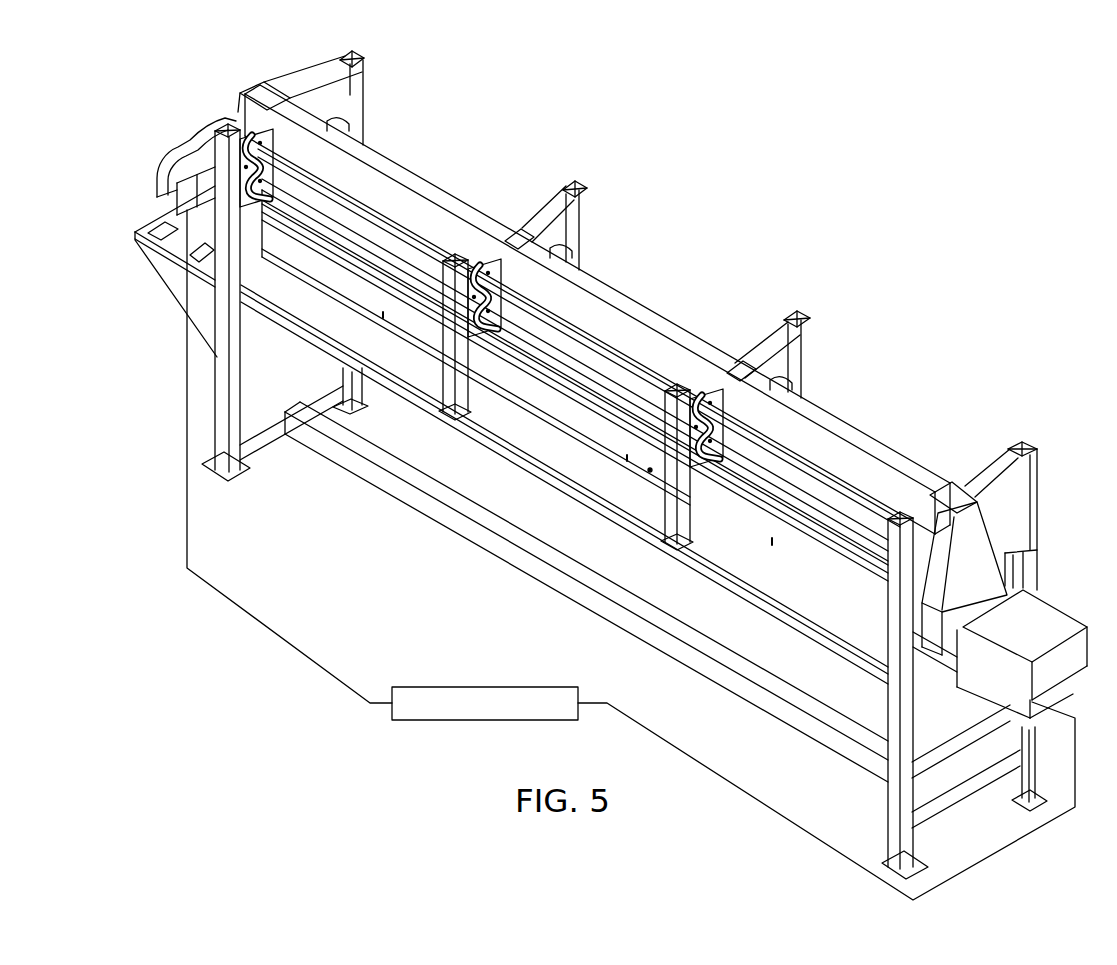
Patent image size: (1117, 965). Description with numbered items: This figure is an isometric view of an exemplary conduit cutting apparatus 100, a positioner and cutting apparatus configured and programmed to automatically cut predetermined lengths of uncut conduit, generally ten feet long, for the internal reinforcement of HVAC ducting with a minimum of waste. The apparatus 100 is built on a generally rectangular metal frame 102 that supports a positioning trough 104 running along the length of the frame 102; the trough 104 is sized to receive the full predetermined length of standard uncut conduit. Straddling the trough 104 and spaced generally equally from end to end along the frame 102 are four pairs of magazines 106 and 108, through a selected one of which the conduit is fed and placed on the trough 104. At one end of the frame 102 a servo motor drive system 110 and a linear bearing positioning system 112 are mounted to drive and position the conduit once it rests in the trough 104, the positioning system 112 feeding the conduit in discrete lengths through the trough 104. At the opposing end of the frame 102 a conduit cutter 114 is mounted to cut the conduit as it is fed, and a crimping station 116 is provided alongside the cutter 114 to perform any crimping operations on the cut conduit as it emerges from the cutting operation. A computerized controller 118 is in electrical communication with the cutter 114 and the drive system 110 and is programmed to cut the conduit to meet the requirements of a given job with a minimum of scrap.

The conduit cutting apparatus 100 is at (590, 475).
The frame 102 is at (403, 487).
The positioning trough 104 is at (548, 408).
The magazine 106 is at (250, 142).
The magazine 108 is at (345, 90).
The servo motor drive system 110 is at (997, 702).
The linear bearing positioning system 112 is at (1043, 620).
The conduit cutter 114 is at (185, 200).
The crimping station 116 is at (173, 284).
The computerized controller 118 is at (453, 687).